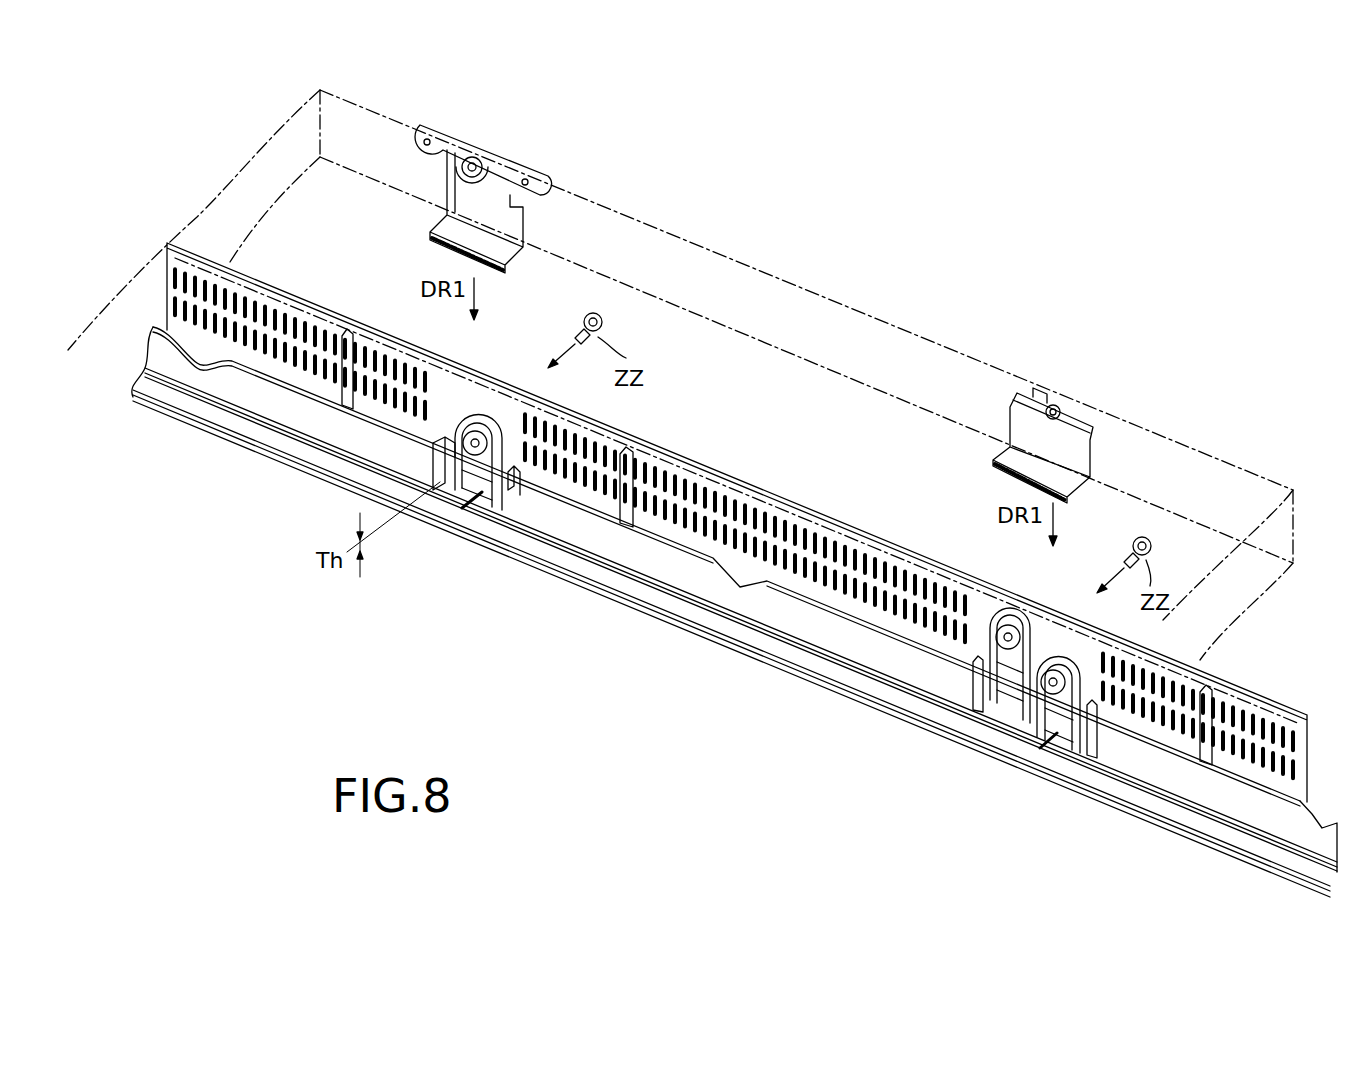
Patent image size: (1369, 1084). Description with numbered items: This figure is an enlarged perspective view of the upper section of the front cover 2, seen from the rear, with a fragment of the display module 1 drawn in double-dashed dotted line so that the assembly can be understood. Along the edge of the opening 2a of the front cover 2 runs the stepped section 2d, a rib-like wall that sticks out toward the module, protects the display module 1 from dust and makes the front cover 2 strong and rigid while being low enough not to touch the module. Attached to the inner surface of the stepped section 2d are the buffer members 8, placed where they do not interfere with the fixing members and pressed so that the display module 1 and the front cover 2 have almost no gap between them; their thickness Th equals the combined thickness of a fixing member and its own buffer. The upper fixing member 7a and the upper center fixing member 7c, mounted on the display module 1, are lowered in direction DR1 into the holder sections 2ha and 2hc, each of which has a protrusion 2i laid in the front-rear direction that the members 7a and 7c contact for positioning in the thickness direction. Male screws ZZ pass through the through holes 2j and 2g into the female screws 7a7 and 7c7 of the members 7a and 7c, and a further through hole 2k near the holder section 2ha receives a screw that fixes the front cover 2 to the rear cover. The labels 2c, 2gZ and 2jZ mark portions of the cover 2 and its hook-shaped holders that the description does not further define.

The display module 1 is at (733, 262).
The front cover 2 is at (547, 583).
The opening 2a is at (690, 640).
The front edge portion 2c is at (503, 553).
The stepped section 2d is at (580, 587).
The through hole 2g is at (482, 413).
The hook inner edge 2gZ is at (437, 493).
The holder section 2ha is at (1003, 724).
The holder section 2hc is at (453, 550).
The protrusion 2i is at (477, 513).
The through hole 2j is at (1040, 668).
The hook inner edge 2jZ is at (1060, 748).
The through hole 2k is at (995, 600).
The upper fixing member 7a is at (1070, 390).
The female screw 7a7 is at (1047, 388).
The upper center fixing member 7c is at (503, 157).
The female screw 7c7 is at (467, 150).
The buffer member 8 is at (200, 400).